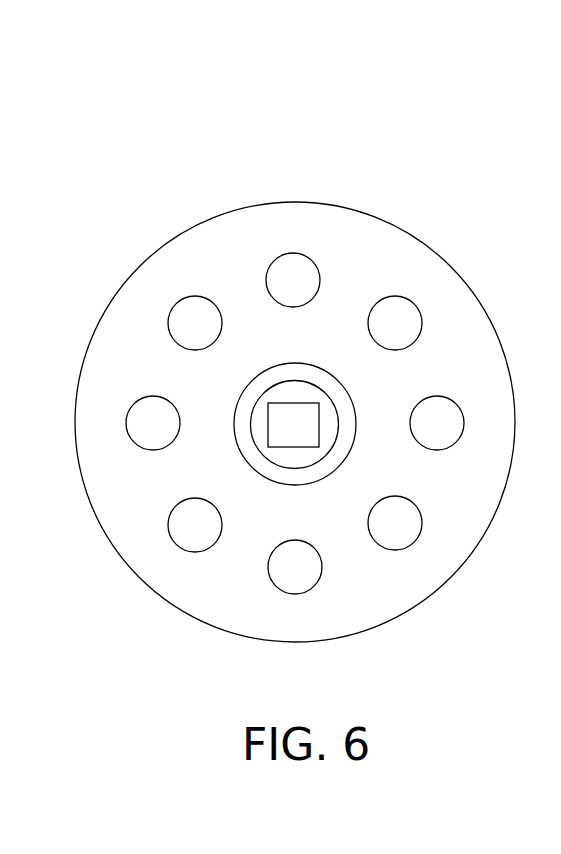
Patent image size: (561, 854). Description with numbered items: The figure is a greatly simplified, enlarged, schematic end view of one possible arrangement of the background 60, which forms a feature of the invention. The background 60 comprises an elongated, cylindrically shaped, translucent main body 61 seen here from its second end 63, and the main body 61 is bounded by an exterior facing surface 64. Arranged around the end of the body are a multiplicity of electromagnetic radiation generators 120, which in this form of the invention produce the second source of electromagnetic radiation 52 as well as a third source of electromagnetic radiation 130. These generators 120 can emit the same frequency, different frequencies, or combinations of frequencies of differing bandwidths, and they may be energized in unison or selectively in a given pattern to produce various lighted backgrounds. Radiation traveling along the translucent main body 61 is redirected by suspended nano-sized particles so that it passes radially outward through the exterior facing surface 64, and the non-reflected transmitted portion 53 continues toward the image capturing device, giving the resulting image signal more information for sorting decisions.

The background 60 is at (310, 176).
The main body 61 is at (420, 265).
The second end 63 is at (363, 237).
The exterior facing surface 64 is at (110, 306).
The third source of electromagnetic radiation 130 is at (292, 272).
The transmitted electromagnetic radiation 53 is at (450, 417).
The second source of electromagnetic radiation 52 is at (458, 438).
The electromagnetic radiation generators 120 is at (283, 570).